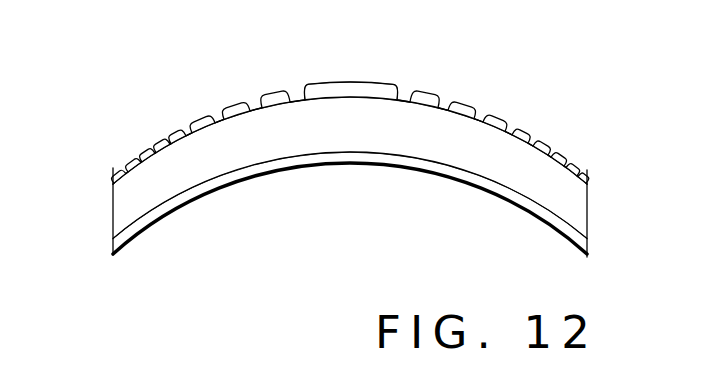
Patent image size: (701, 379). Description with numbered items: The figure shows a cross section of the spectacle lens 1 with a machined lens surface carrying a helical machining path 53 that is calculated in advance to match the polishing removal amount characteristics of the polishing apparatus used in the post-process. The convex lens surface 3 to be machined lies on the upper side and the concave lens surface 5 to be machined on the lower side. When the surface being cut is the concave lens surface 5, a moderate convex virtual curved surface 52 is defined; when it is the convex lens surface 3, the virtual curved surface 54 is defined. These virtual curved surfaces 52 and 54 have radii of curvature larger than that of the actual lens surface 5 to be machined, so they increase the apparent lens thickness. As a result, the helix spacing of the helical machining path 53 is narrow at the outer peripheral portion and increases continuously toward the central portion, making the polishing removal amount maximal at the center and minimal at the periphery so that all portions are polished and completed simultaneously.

The spectacle lens 1 is at (350, 177).
The convex lens surface to be machined 3 is at (113, 184).
The concave lens surface to be machined 5 is at (113, 240).
The virtual curved surface 52 is at (153, 226).
The helical machining path 53 is at (192, 128).
The virtual curved surface 54 is at (317, 83).